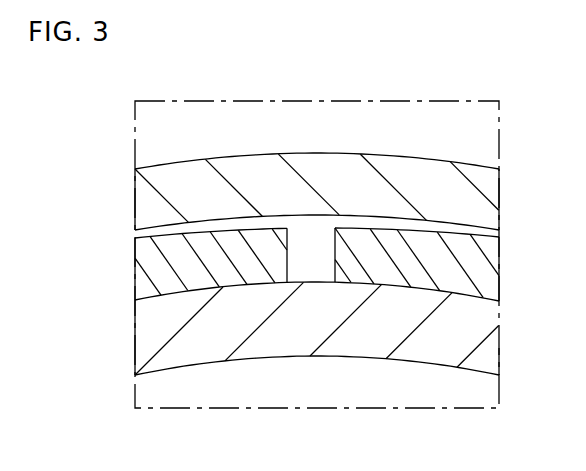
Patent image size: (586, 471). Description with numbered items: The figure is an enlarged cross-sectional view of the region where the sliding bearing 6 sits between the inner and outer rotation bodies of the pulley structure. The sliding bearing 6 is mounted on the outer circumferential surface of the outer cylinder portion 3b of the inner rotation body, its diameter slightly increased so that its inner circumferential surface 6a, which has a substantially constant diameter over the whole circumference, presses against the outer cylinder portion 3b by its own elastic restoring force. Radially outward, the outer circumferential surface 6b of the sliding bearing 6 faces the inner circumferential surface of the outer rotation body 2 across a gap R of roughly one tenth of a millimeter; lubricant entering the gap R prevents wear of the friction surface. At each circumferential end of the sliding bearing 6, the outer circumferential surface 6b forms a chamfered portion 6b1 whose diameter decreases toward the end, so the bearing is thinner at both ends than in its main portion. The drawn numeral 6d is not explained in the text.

The outer rotation body 2 is at (321, 154).
The outer cylinder portion 3b is at (417, 345).
The sliding bearing 6 is at (206, 277).
The inner circumferential surface 6a is at (396, 283).
The outer circumferential surface 6b is at (178, 231).
The chamfered portion 6b1 is at (259, 226).
The groove 6d is at (312, 262).
The gap R is at (440, 223).